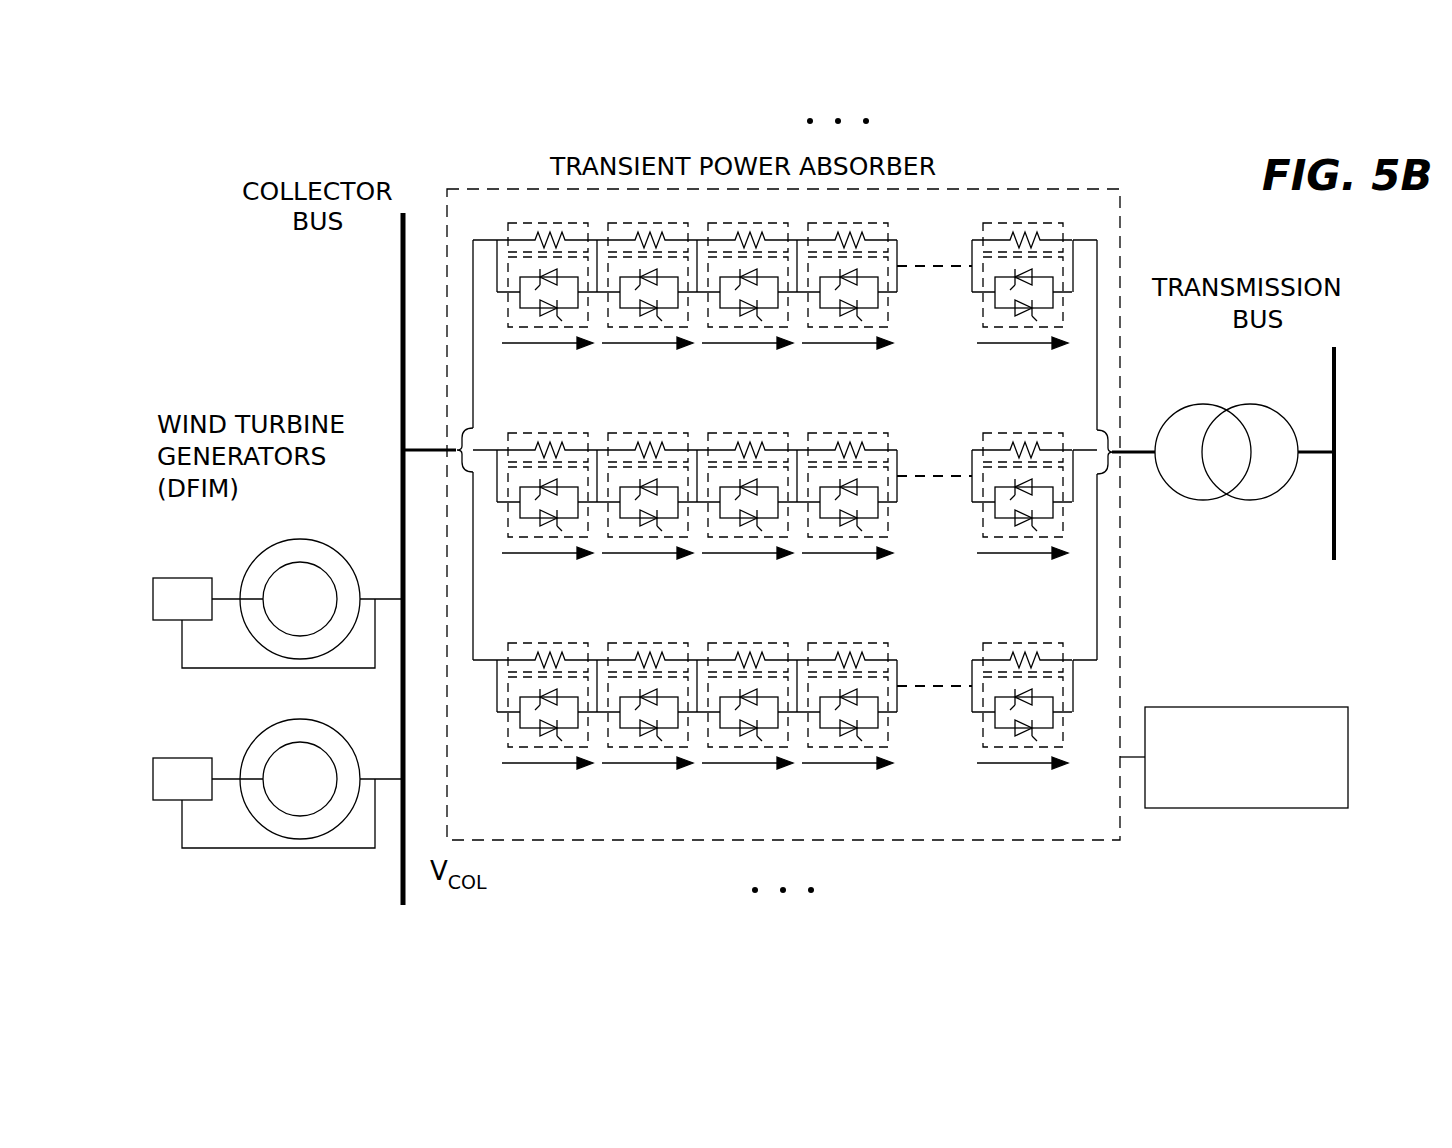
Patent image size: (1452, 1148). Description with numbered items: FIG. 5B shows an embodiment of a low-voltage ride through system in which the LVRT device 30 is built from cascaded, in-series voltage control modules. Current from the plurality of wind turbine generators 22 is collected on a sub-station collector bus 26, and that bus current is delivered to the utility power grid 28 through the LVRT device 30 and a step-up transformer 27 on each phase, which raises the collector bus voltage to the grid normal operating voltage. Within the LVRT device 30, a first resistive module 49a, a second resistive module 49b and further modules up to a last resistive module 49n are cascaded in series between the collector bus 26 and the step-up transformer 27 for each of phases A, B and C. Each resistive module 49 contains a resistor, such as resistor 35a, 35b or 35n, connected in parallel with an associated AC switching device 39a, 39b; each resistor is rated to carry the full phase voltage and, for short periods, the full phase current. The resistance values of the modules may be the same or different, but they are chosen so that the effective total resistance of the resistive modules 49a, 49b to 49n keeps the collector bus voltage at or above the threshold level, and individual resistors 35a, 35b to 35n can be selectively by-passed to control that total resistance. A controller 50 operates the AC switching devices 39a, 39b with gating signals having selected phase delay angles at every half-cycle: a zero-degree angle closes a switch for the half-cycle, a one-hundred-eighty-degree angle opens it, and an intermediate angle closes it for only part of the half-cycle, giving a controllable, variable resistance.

The wind turbine generators 22 is at (258, 557).
The collector bus 26 is at (403, 281).
The step-up transformer 27 is at (1212, 405).
The utility power grid 28 is at (1337, 378).
The LVRT device 30 is at (826, 508).
The resistor 35a is at (537, 228).
The resistor 35b is at (667, 228).
The resistor 35n is at (1011, 228).
The AC switching device 39a is at (868, 487).
The AC switching device 39b is at (868, 520).
The resistive module 49 is at (904, 246).
The resistive module 49a is at (555, 745).
The resistive module 49b is at (655, 745).
The resistive module 49n is at (978, 730).
The controller 50 is at (1255, 808).